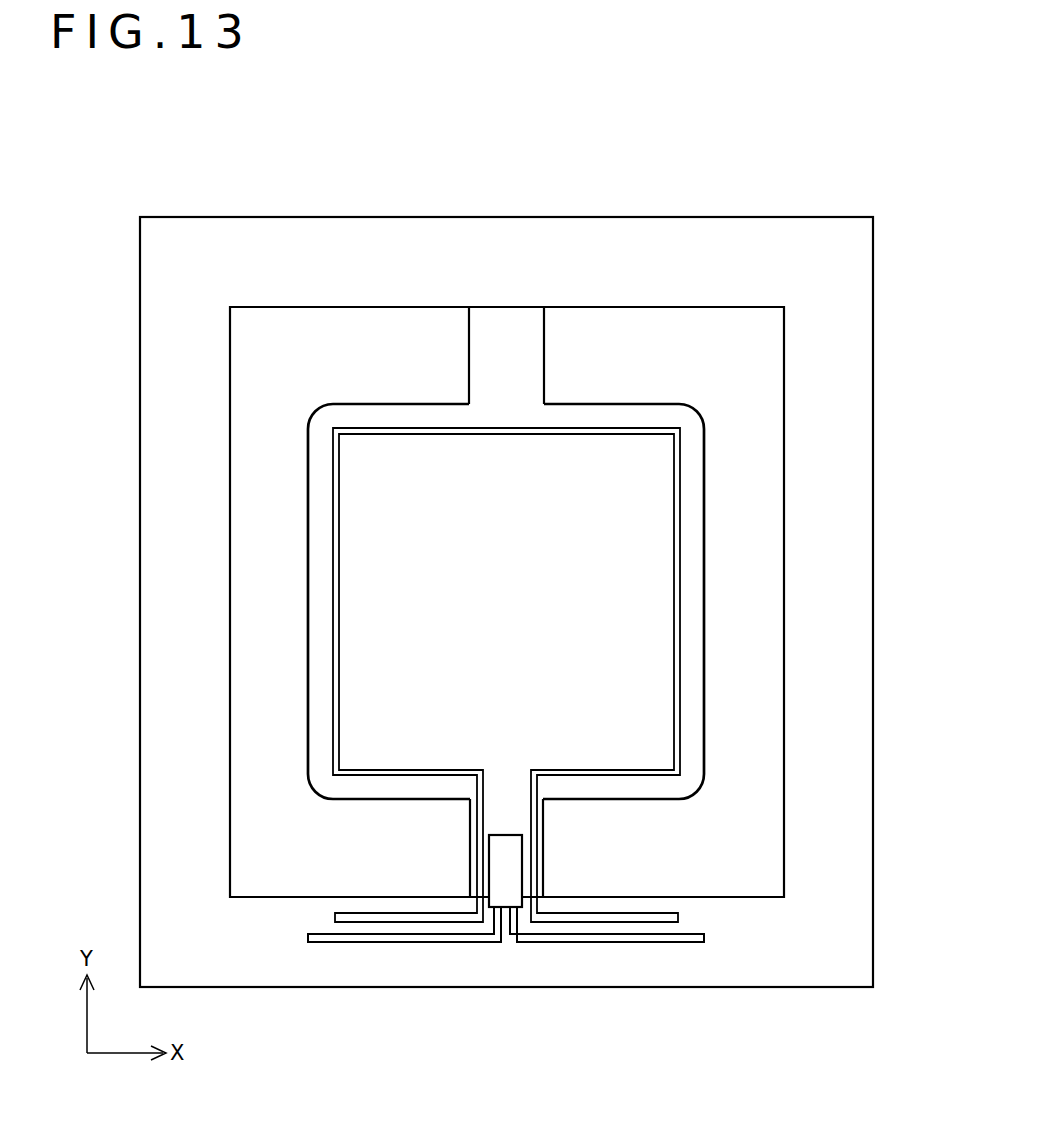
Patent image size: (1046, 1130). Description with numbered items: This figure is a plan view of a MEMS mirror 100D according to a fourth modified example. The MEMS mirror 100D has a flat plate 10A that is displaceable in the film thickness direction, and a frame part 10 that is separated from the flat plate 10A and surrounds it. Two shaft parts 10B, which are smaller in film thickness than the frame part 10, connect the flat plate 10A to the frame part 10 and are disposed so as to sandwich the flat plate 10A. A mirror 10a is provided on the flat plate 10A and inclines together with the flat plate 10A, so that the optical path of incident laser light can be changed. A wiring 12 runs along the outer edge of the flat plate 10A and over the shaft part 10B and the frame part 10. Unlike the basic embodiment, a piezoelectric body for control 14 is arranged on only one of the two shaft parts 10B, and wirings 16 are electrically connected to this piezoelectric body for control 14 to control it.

The MEMS mirror 100D is at (127, 211).
The frame part 10 is at (855, 333).
The flat plate 10A is at (706, 450).
The shaft parts 10B is at (545, 352).
The mirror 10a is at (623, 602).
The wiring 12 is at (681, 734).
The piezoelectric body for control 14 is at (506, 855).
The wirings 16 is at (594, 940).